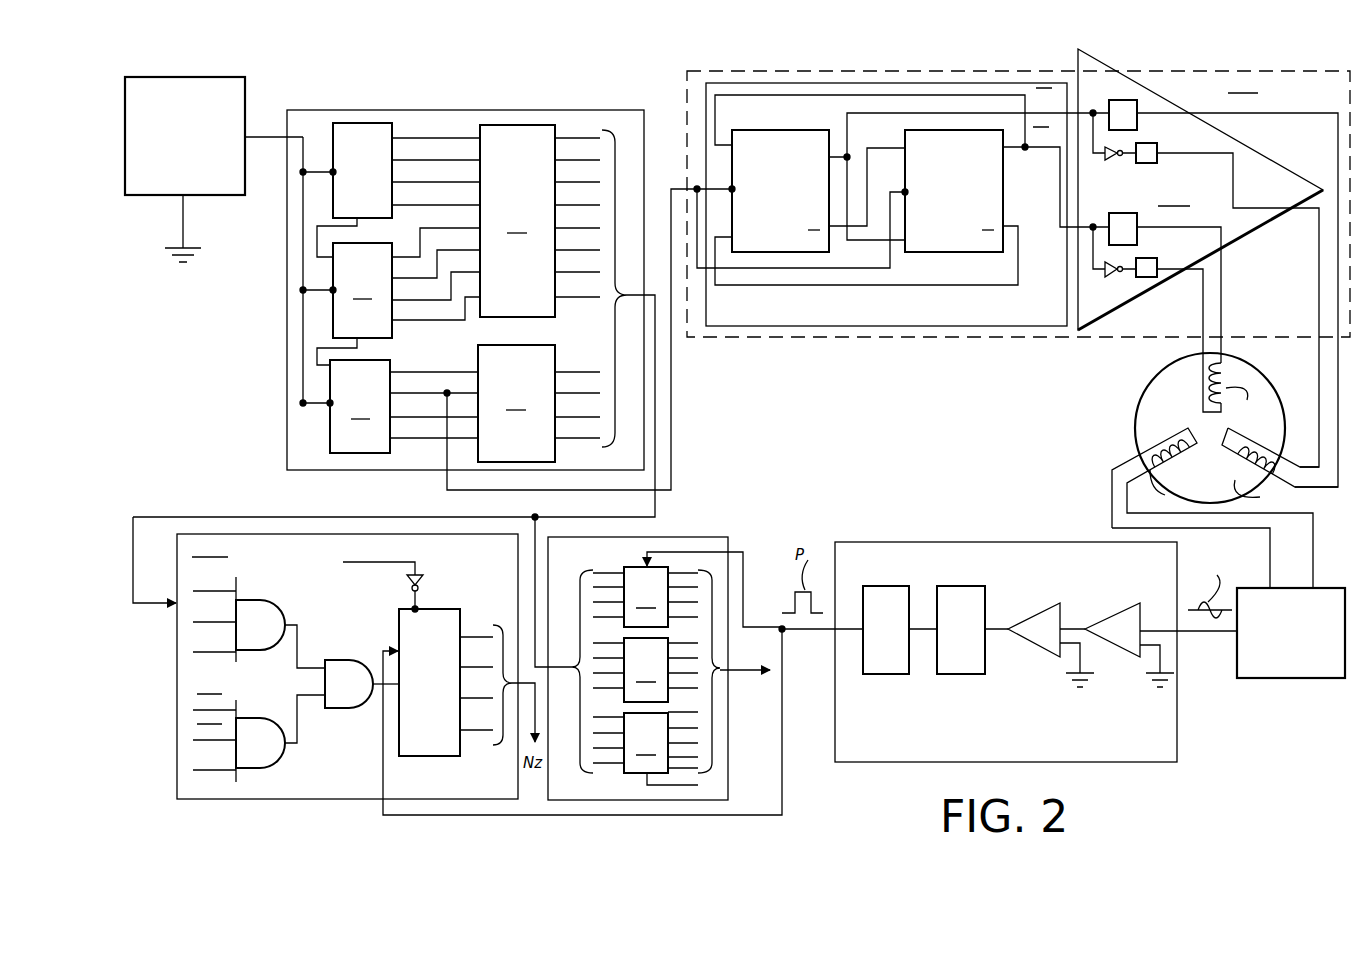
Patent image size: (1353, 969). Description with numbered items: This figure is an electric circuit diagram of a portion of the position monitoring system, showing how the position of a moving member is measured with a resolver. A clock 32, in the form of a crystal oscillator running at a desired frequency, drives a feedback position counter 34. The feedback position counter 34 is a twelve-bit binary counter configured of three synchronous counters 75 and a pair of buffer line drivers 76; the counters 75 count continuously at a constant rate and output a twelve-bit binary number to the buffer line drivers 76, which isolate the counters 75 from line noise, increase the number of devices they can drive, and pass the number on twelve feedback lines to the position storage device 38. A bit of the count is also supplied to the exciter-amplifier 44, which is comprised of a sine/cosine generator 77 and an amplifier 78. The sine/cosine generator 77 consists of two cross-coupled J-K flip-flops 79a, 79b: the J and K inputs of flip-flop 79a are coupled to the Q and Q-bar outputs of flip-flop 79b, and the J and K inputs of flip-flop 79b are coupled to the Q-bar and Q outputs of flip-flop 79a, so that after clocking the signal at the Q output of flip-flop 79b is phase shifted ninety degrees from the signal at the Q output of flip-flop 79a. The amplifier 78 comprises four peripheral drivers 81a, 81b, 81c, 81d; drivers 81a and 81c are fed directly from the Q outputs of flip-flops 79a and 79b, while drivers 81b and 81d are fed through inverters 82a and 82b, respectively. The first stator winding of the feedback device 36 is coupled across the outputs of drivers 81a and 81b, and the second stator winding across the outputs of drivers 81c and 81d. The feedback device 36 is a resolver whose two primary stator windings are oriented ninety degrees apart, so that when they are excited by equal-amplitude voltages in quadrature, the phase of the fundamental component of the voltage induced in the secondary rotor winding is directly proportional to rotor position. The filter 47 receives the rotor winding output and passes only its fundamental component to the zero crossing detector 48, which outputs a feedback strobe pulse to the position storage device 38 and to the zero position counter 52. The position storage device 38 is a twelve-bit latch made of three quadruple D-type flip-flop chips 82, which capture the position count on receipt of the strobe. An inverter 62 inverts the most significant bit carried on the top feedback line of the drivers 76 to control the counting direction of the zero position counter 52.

The clock 32 is at (197, 77).
The feedback position counter 34 is at (644, 150).
The synchronous counters 75 is at (333, 203).
The buffer line drivers 76 is at (495, 291).
The exciter-amplifier 44 is at (897, 337).
The sine/cosine generator 77 is at (762, 327).
The J-K flip-flop 79a is at (780, 191).
The J-K flip-flop 79b is at (954, 191).
The amplifier 78 is at (1270, 157).
The peripheral driver 81a is at (1120, 100).
The peripheral driver 81b is at (1152, 163).
The peripheral driver 81c is at (1120, 213).
The peripheral driver 81d is at (1147, 278).
The inverter 82a is at (1108, 157).
The inverter 82b is at (1106, 275).
The feedback device 36 is at (1137, 395).
The filter 47 is at (1283, 678).
The zero crossing detector 48 is at (975, 542).
The position storage device 38 is at (705, 537).
The quadruple D-type flip-flops 82 is at (645, 676).
The zero position counter 52 is at (177, 728).
The inverter 62 is at (425, 579).